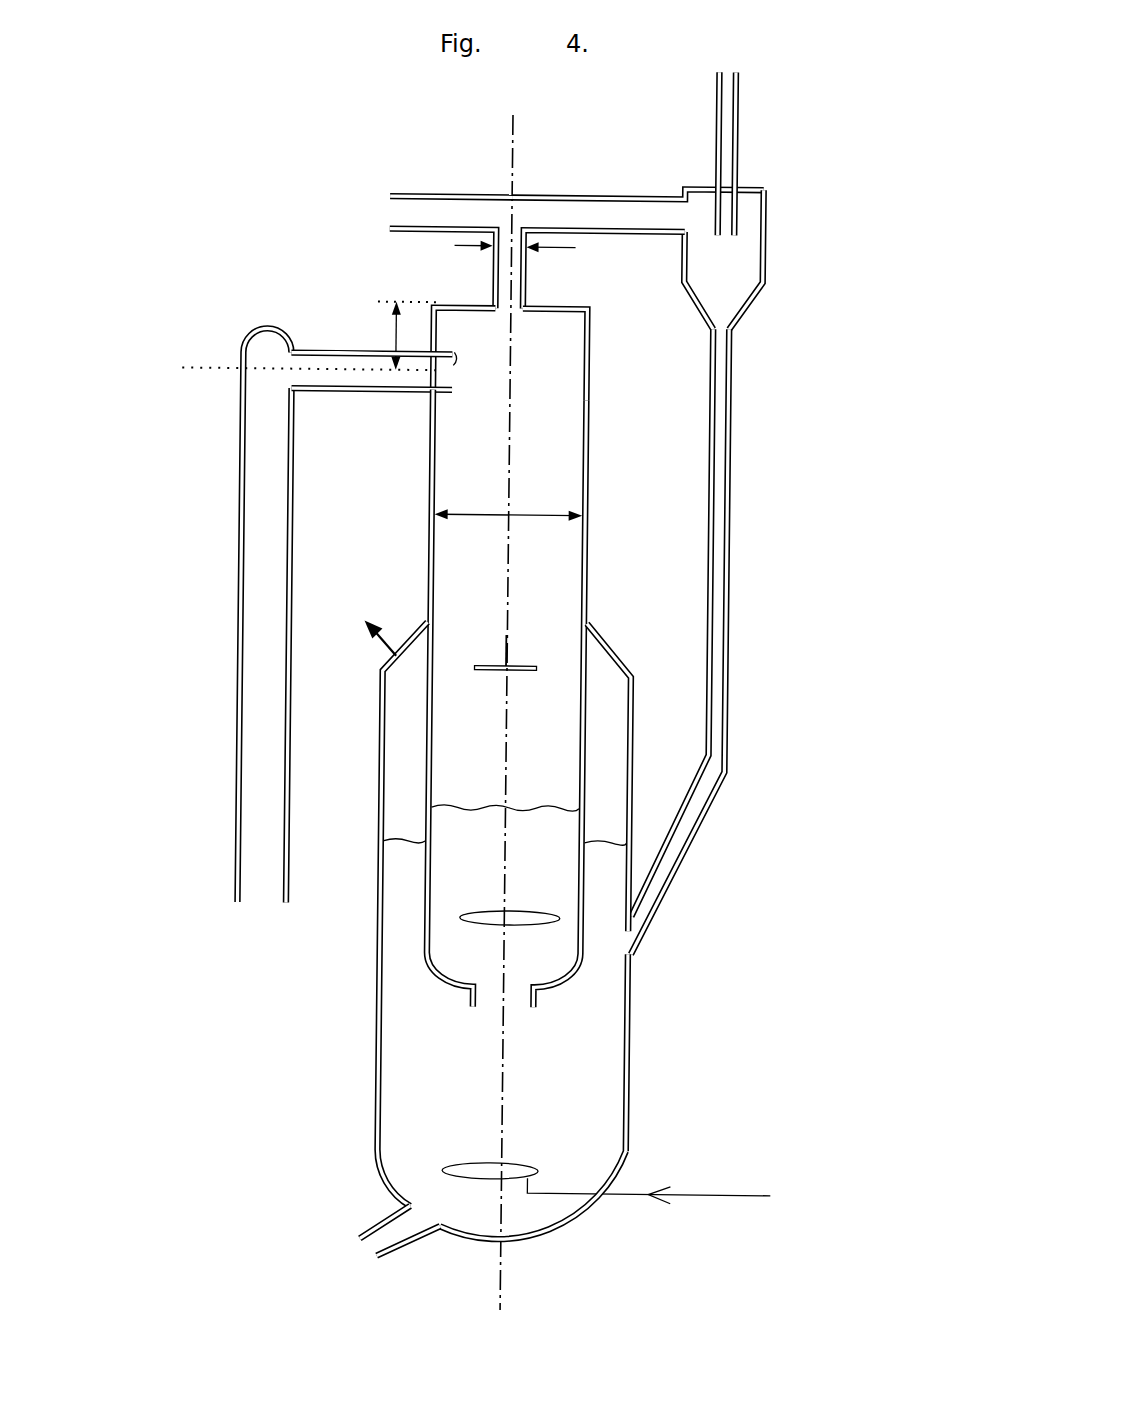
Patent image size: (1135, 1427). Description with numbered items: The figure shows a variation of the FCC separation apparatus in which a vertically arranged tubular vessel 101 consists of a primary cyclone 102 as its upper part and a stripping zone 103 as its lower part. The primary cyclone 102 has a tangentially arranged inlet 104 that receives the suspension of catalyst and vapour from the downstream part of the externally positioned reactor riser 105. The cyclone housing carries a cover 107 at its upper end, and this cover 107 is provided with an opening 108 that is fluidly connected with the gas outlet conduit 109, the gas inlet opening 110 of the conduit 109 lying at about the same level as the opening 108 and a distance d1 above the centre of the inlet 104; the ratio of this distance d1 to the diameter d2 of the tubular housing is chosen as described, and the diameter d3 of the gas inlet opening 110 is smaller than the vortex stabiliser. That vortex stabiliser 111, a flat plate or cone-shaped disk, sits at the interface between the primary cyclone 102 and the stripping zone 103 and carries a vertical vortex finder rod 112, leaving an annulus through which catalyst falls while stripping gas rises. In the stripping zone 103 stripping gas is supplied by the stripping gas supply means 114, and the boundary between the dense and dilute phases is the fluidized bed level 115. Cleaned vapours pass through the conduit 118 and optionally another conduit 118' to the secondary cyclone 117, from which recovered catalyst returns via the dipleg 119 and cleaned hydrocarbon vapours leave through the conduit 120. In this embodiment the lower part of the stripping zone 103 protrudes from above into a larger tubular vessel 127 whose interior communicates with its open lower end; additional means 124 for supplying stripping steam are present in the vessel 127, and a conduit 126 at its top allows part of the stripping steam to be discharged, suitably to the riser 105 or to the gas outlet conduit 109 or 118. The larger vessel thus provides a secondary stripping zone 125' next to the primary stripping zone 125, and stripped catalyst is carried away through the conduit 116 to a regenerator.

The tubular vessel 101 is at (592, 590).
The primary cyclone 102 is at (593, 364).
The stripping zone 103 is at (588, 795).
The tangentially arranged inlet 104 is at (397, 370).
The FCC reactor riser 105 is at (243, 632).
The cover 107 is at (403, 285).
The opening 108 is at (505, 314).
The conduit 109 is at (528, 273).
The gas inlet opening 110 is at (522, 303).
The vortex stabiliser 111 is at (492, 672).
The vortex finder 112 is at (514, 648).
The stripping gas supply means 114 is at (527, 926).
The fluidized bed level 115 is at (570, 806).
The conduit 116 is at (391, 1230).
The secondary cyclone 117 is at (767, 237).
The conduit 118 is at (638, 175).
The other conduit 118' is at (450, 173).
The dipleg 119 is at (735, 558).
The conduit 120 is at (739, 96).
The additional means for supplying stripping steam 124 is at (570, 1146).
The primary stripping zone 125 is at (504, 865).
The secondary stripping zone 125' is at (451, 1075).
The conduit 126 is at (388, 652).
The larger tubular vessel 127 is at (386, 1032).
The distance d1 is at (309, 334).
The diameter of the tubular housing d2 is at (509, 504).
The diameter of the gas inlet opening d3 is at (534, 250).